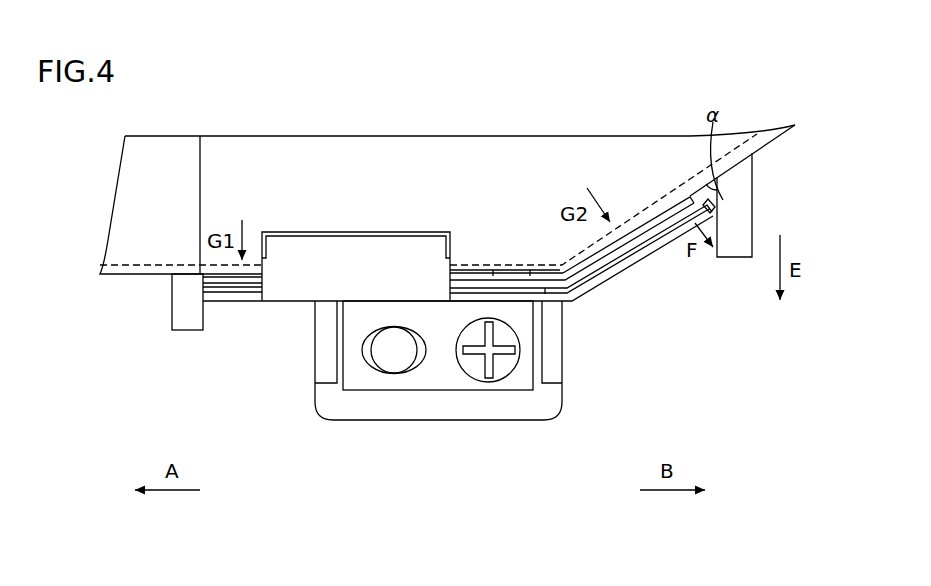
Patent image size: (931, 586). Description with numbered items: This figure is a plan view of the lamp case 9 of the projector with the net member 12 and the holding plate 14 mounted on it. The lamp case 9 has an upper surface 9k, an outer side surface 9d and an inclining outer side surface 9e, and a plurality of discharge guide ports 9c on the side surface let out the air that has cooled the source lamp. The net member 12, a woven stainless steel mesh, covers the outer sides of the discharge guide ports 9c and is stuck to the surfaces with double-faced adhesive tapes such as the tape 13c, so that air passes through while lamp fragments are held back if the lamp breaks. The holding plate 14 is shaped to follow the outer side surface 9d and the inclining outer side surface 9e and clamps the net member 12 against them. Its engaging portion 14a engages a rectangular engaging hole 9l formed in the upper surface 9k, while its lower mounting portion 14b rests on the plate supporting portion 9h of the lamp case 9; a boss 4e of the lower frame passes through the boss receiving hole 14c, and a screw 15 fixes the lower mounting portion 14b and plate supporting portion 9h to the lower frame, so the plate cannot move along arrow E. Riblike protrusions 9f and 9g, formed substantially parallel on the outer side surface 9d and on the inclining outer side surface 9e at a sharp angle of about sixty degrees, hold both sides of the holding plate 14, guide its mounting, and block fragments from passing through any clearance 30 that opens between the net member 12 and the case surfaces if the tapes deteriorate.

The lamp case 9 is at (543, 112).
The upper surface 9k is at (381, 167).
The inclining outer side surface 9e is at (693, 196).
The protrusion 9g is at (740, 227).
The double-faced adhesive tape 13c is at (667, 199).
The discharge guide ports 9c is at (493, 273).
The outer side surface 9d is at (512, 285).
The net member 12 is at (605, 258).
The holding plate 14 is at (642, 248).
The engaging hole 9l is at (285, 247).
The engaging portion 14a is at (328, 247).
The protrusion 9f is at (178, 290).
The clearance 30 is at (200, 293).
The plate supporting portion 9h is at (545, 400).
The lower mounting portion 14b is at (440, 375).
The boss receiving hole 14c is at (372, 372).
The boss 4e is at (390, 352).
The screw 15 is at (502, 378).